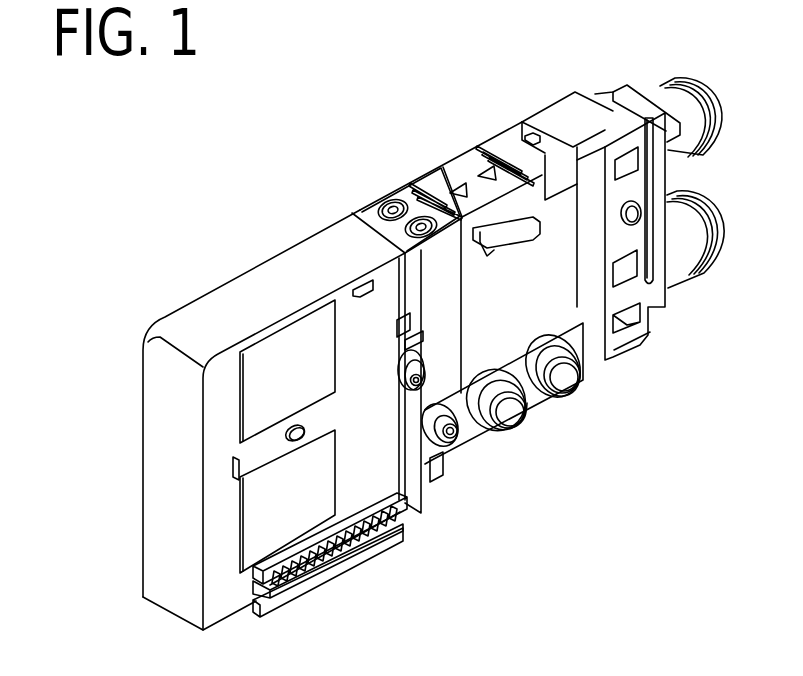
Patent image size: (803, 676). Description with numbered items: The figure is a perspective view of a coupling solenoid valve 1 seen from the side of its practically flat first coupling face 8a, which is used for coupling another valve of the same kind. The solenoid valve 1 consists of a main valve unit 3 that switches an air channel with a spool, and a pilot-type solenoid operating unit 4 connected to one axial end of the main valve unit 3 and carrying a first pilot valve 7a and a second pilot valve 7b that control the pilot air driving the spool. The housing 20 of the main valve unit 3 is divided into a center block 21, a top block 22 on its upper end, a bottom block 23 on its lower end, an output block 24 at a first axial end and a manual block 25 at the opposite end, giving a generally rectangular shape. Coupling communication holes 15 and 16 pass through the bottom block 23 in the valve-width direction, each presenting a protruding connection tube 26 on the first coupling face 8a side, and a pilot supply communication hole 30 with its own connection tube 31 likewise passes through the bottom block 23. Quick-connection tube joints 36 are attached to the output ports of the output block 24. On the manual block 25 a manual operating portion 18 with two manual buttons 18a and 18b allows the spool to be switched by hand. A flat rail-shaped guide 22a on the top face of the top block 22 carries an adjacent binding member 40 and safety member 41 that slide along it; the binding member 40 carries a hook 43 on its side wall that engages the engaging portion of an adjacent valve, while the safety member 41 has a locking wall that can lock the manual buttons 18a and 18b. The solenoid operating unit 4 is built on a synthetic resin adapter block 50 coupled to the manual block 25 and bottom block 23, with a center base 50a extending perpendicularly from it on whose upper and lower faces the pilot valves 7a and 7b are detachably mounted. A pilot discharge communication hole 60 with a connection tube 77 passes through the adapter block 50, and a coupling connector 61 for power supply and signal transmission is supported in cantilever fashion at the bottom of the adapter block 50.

The solenoid valve 1 is at (275, 85).
The main valve unit 3 is at (440, 98).
The solenoid operating unit 4 is at (221, 262).
The first pilot valve 7a is at (250, 393).
The second pilot valve 7b is at (262, 528).
The first coupling face 8a is at (620, 298).
The coupling communication hole 15 is at (570, 388).
The coupling communication hole 16 is at (503, 415).
The manual operating portion 18 is at (370, 190).
The manual button 18a is at (380, 206).
The manual button 18b is at (407, 228).
The housing 20 is at (655, 361).
The center block 21 is at (583, 225).
The top block 22 is at (544, 112).
The guide 22a is at (522, 138).
The bottom block 23 is at (533, 413).
The output block 24 is at (571, 96).
The manual block 25 is at (395, 196).
The connection tube 26 is at (508, 412).
The pilot supply communication hole 30 is at (447, 440).
The connection tube 31 is at (445, 450).
The tube joint 36 is at (668, 86).
The binding member 40 is at (462, 160).
The safety member 41 is at (440, 173).
The hook 43 is at (524, 238).
The adapter block 50 is at (412, 508).
The center base 50a is at (262, 455).
The pilot discharge communication hole 60 is at (420, 382).
The coupling connector 61 is at (312, 545).
The connection tube 77 is at (422, 352).